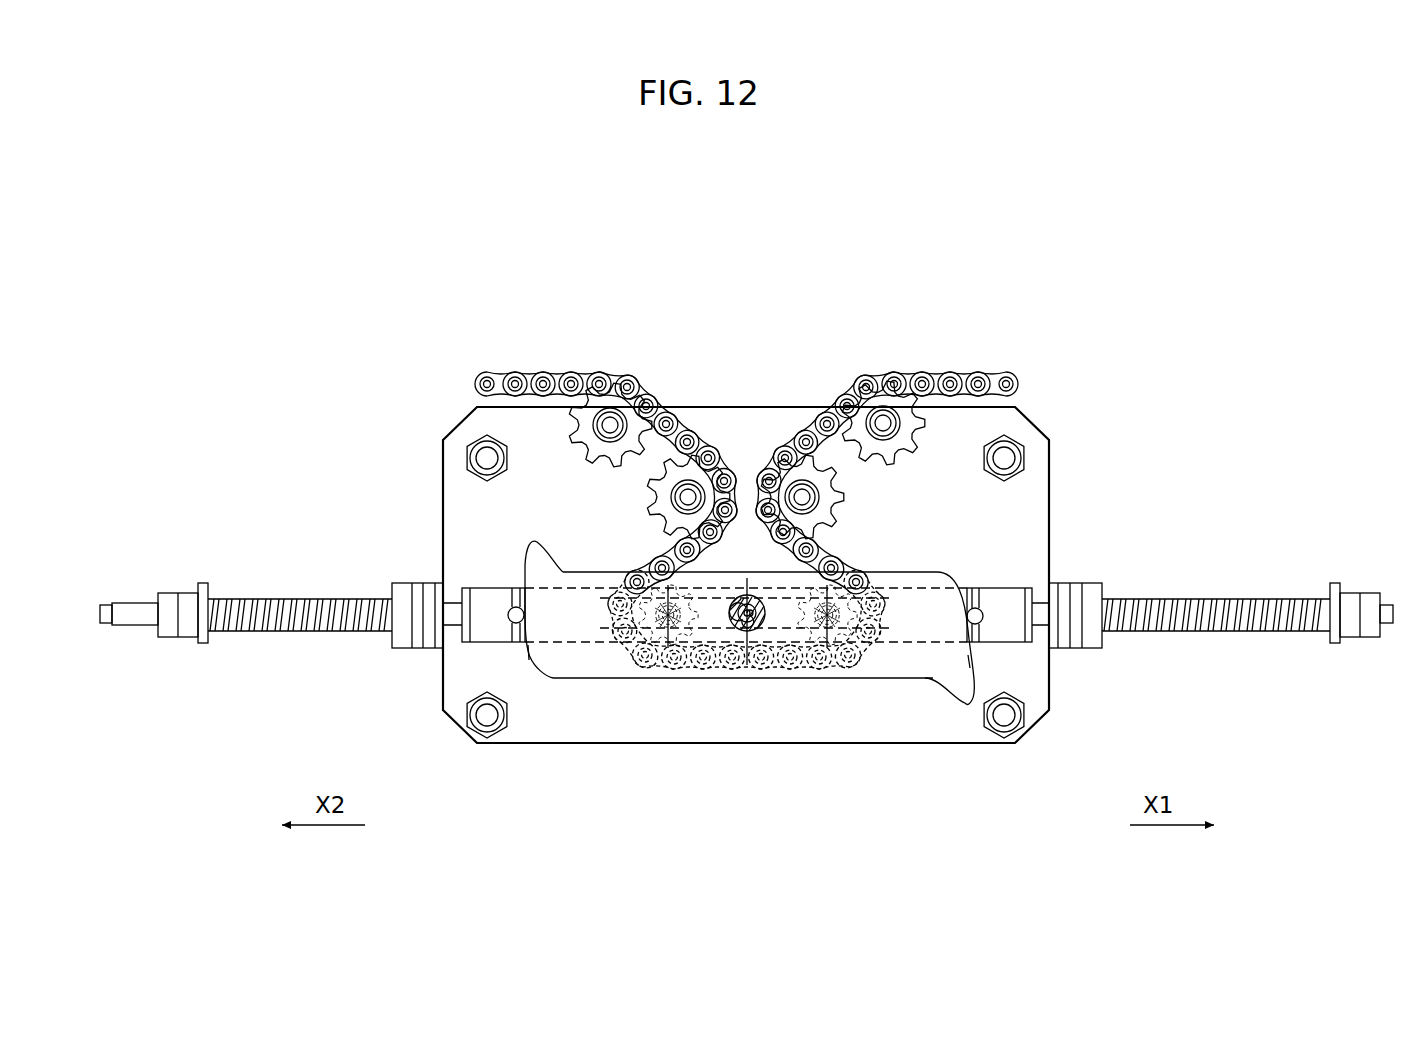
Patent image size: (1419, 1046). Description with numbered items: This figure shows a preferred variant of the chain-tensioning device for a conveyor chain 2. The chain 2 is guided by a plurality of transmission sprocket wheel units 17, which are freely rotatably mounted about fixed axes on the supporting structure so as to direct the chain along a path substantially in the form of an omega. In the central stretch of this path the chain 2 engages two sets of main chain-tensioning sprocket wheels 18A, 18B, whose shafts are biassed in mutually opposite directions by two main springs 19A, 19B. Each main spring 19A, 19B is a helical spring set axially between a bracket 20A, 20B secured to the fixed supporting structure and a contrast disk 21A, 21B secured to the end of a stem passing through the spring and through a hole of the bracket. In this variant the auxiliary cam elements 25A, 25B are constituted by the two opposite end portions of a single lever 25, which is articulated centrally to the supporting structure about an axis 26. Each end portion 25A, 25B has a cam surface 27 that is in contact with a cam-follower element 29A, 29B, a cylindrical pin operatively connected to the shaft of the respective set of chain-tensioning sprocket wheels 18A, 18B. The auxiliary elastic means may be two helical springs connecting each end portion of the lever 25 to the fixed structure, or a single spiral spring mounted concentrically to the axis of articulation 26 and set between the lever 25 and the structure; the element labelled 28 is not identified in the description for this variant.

The chain 2 is at (523, 338).
The sprocket wheel units 17 is at (561, 440).
The set of main chain-tensioning sprocket wheels 18A is at (825, 650).
The set of main chain-tensioning sprocket wheels 18B is at (670, 650).
The main spring 19A is at (1272, 633).
The main spring 19B is at (277, 633).
The bracket 20A is at (1090, 633).
The bracket 20B is at (400, 633).
The contrast disk 21A is at (1337, 633).
The contrast disk 21B is at (205, 640).
The lever 25 is at (587, 686).
The end portion of the lever 25A is at (950, 633).
The end portion of the lever 25B is at (550, 580).
The axis of articulation 26 is at (730, 595).
The cam surface 27 is at (530, 655).
The shaft 28 is at (770, 640).
The cam-follower element 29A is at (976, 608).
The cam-follower element 29B is at (513, 624).